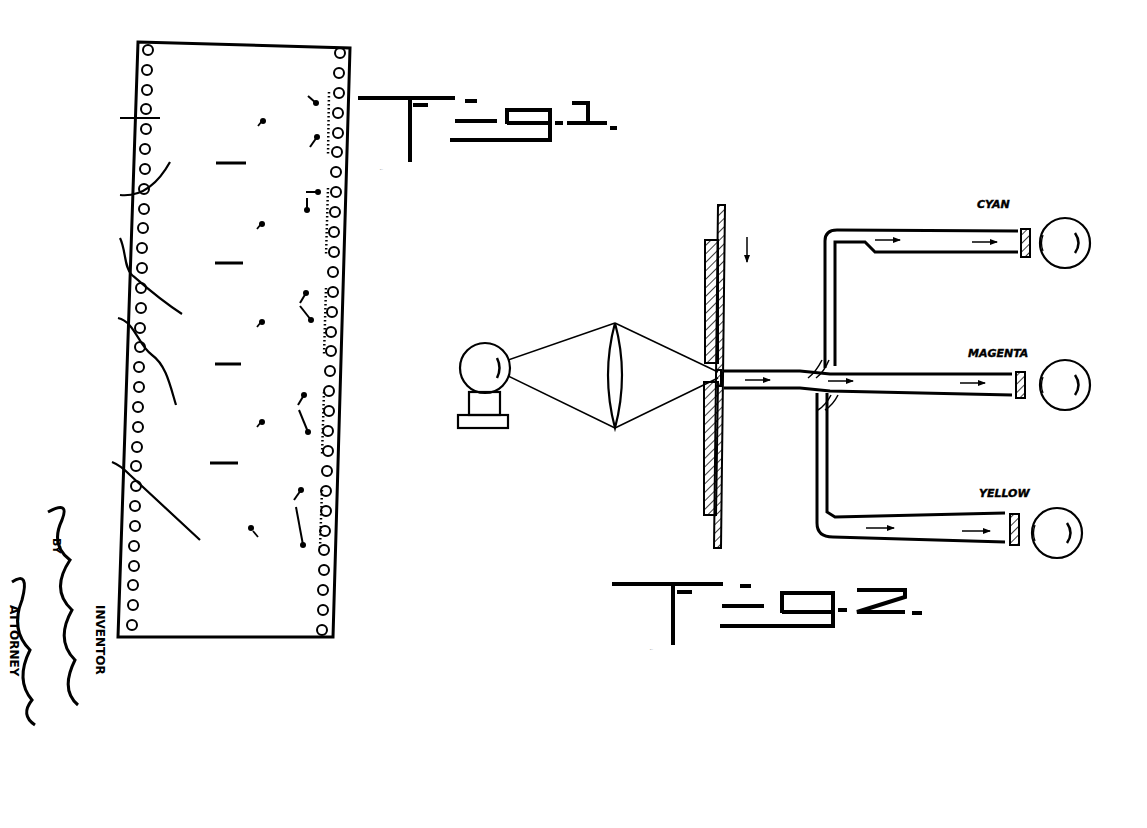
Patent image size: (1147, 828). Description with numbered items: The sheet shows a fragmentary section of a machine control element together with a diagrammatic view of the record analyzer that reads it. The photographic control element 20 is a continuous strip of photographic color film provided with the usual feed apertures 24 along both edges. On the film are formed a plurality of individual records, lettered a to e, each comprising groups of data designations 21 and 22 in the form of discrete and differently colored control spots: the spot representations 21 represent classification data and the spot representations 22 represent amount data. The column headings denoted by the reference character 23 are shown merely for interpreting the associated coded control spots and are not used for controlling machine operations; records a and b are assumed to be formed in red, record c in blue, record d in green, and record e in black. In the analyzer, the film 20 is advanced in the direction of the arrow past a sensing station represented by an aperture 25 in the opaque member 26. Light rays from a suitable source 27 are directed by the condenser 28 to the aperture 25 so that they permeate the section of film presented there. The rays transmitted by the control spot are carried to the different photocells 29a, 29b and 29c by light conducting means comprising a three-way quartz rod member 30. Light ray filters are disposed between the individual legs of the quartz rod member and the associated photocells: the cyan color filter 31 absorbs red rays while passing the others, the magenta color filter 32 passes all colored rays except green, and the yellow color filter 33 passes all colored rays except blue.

In FIG. 1, the photographic control element 20 is at (340, 262).
In FIG. 2, the photographic control element 20 is at (726, 533).
In FIG. 1, the data designations 21 is at (254, 335).
In FIG. 1, the data designations 22 is at (302, 316).
In FIG. 1, the interpreting data 23 is at (220, 74).
In FIG. 1, the feed apertures 24 is at (147, 108).
In FIG. 2, the aperture 25 is at (718, 375).
In FIG. 2, the opaque member 26 is at (710, 285).
In FIG. 2, the light source 27 is at (472, 368).
In FIG. 2, the condenser 28 is at (612, 395).
In FIG. 2, the photocell 29a is at (1080, 262).
In FIG. 2, the photocell 29b is at (1077, 405).
In FIG. 2, the photocell 29c is at (1072, 554).
In FIG. 2, the three-way quartz rod member 30 is at (836, 376).
In FIG. 2, the cyan color filter 31 is at (1022, 258).
In FIG. 2, the magenta color filter 32 is at (1019, 400).
In FIG. 2, the yellow color filter 33 is at (1014, 547).